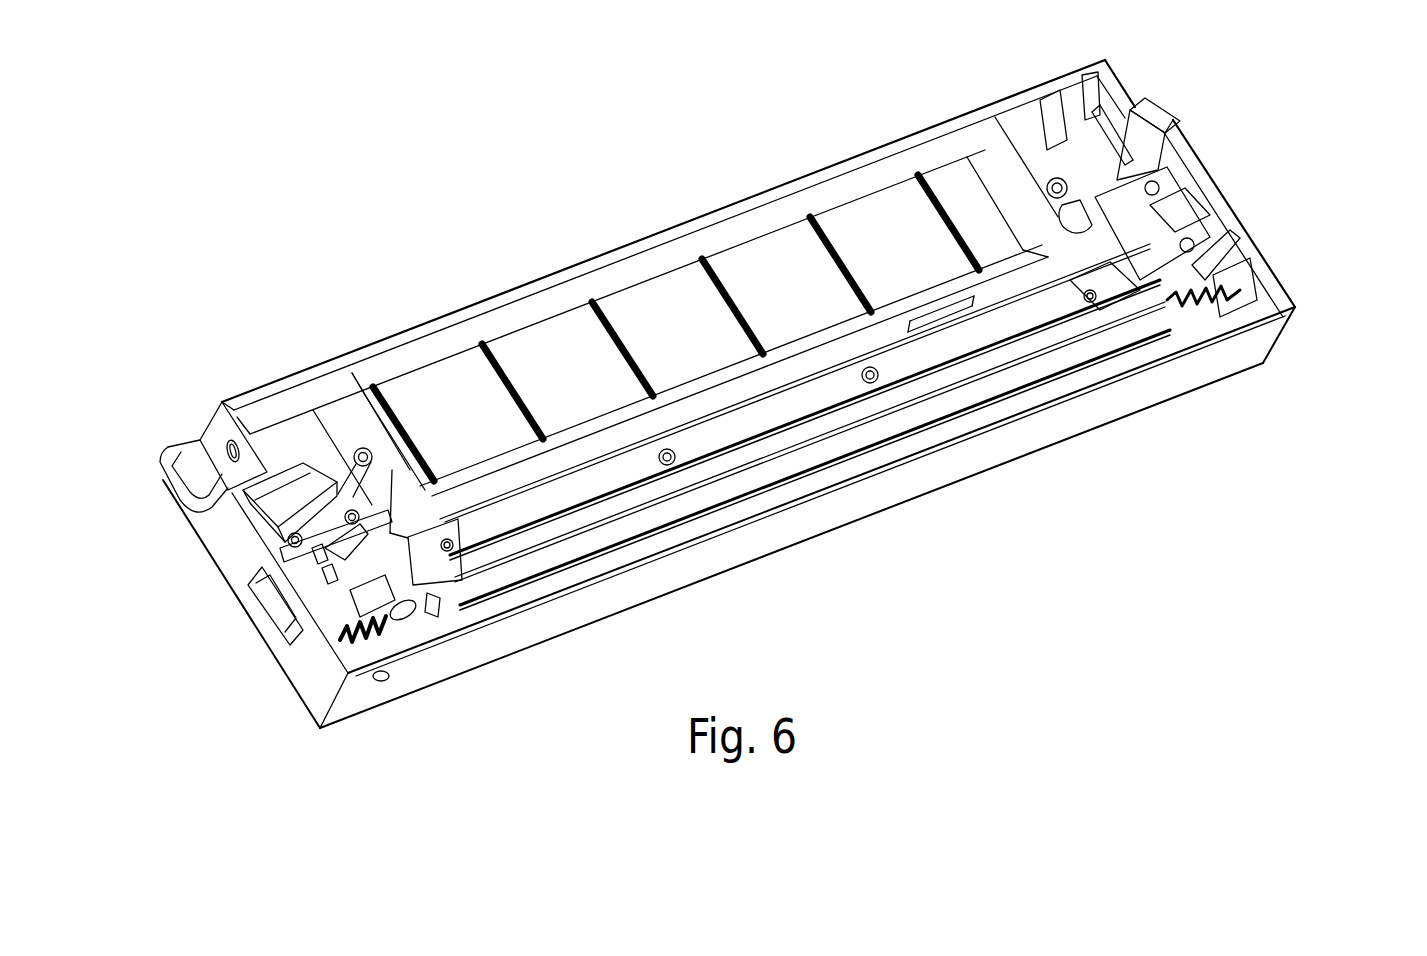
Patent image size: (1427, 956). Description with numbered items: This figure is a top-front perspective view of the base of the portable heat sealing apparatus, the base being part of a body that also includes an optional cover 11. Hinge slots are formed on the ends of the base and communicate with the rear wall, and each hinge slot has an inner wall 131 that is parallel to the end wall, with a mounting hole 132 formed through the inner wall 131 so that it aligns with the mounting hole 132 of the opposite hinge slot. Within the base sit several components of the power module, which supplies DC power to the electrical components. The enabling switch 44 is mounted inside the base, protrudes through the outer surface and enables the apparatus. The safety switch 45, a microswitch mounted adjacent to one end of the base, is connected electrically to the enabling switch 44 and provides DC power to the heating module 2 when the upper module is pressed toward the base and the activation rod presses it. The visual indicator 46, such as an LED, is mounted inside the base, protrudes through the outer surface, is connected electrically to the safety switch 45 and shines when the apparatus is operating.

The heating module 2 is at (1023, 493).
The cover 11 is at (1255, 354).
The inner wall 131 is at (217, 425).
The mounting hole 132 is at (228, 457).
The enabling switch 44 is at (293, 633).
The safety switch 45 is at (273, 488).
The visual indicator 46 is at (388, 682).